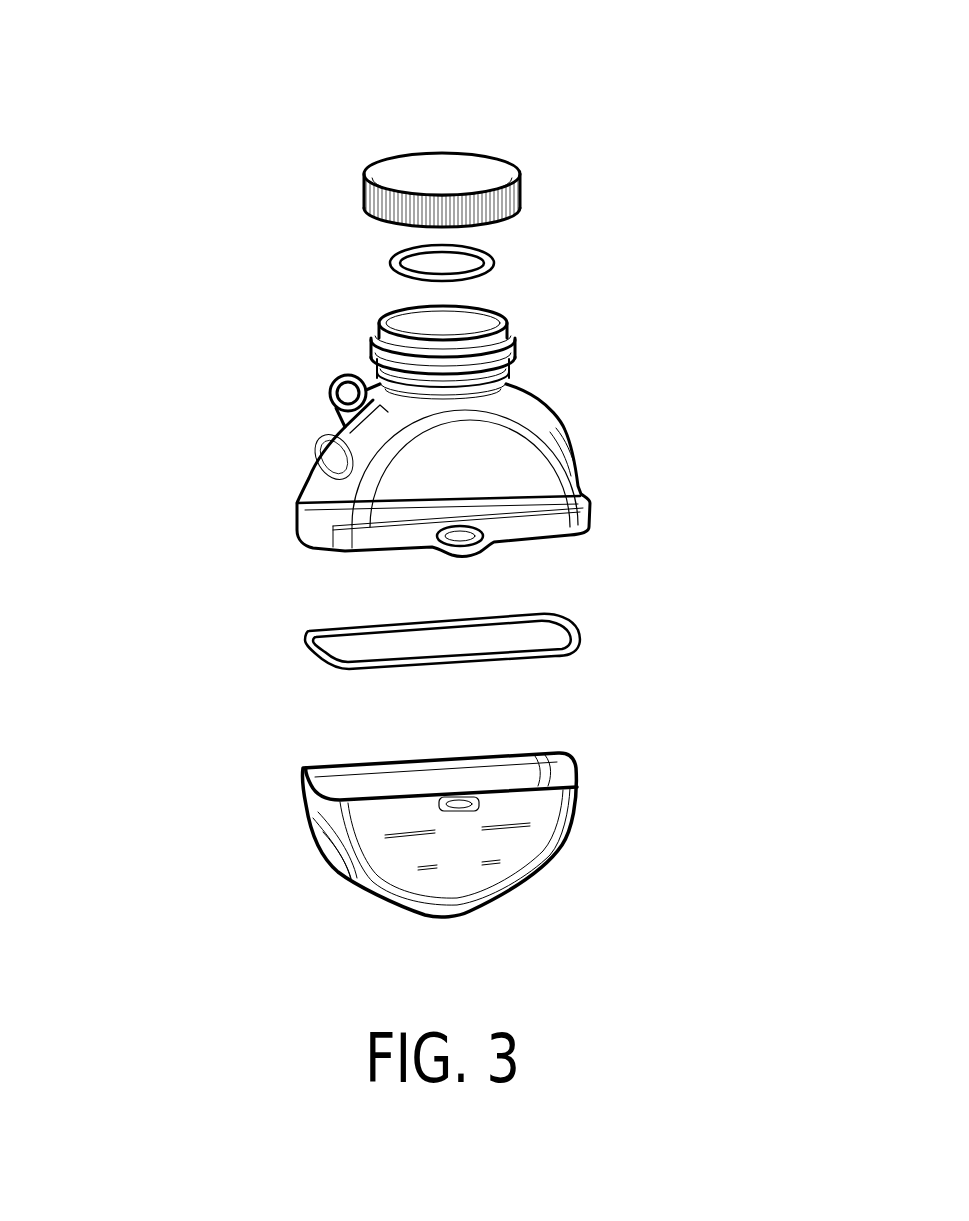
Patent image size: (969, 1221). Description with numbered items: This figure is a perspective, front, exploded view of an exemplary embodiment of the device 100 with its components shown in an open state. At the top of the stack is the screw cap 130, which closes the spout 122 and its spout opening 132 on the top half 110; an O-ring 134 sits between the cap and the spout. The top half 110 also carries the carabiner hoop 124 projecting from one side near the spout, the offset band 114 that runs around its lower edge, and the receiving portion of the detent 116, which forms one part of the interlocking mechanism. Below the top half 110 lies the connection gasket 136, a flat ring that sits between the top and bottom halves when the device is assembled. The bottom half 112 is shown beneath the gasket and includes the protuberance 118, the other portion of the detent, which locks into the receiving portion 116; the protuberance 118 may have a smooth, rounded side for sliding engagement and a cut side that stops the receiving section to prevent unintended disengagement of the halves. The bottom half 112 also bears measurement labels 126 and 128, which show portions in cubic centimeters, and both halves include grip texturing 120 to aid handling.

The device 100 is at (122, 44).
The top half 110 is at (577, 468).
The bottom half 112 is at (398, 872).
The offset band 114 is at (550, 525).
The receiving portion of the detent 116 is at (455, 533).
The protuberance 118 is at (450, 806).
The grip texturing 120 is at (330, 855).
The spout 122 is at (513, 368).
The carabiner hoop 124 is at (330, 388).
The measurement label 126 is at (483, 866).
The measurement label 128 is at (503, 828).
The screw cap 130 is at (454, 177).
The spout opening 132 is at (442, 329).
The O-ring 134 is at (490, 268).
The connection gasket 136 is at (550, 654).